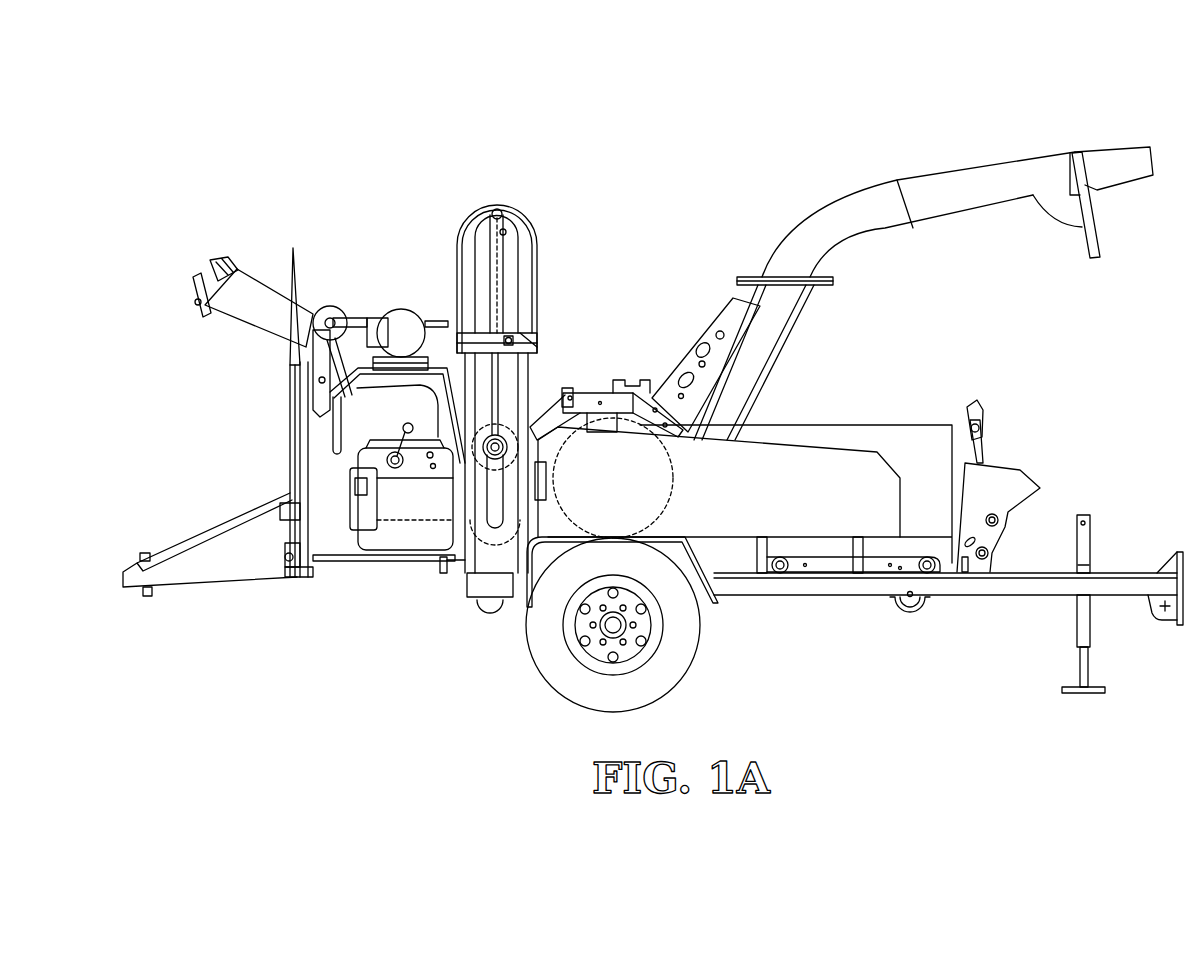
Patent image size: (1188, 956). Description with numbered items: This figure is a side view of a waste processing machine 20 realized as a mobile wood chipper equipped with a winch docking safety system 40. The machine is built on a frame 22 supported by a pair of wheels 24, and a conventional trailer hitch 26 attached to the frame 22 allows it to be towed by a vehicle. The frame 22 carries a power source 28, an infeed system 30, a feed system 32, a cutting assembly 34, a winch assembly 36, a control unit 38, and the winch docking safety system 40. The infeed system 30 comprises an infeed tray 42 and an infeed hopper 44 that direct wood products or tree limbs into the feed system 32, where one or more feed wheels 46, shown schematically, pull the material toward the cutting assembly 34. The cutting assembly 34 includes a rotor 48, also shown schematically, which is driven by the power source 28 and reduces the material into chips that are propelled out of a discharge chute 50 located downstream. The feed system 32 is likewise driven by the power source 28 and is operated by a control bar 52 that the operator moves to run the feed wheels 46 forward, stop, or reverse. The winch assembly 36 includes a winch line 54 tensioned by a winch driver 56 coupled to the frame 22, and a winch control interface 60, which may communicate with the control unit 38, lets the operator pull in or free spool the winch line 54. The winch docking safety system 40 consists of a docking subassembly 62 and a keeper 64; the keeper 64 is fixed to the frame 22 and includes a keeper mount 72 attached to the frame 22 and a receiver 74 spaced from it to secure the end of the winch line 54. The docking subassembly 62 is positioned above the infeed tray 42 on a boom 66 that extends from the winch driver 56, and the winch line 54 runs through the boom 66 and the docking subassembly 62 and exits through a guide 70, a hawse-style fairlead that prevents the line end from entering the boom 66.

The waste processing machine 20 is at (1118, 306).
The frame 22 is at (810, 587).
The wheels 24 is at (677, 635).
The trailer hitch 26 is at (1147, 573).
The power source 28 is at (843, 425).
The infeed system 30 is at (297, 580).
The feed system 32 is at (506, 562).
The cutting assembly 34 is at (583, 412).
The winch assembly 36 is at (375, 315).
The control unit 38 is at (430, 517).
The winch docking safety system 40 is at (290, 350).
The infeed tray 42 is at (180, 573).
The infeed hopper 44 is at (330, 540).
The feed wheels 46 is at (530, 387).
The rotor 48 is at (673, 478).
The discharge chute 50 is at (1118, 163).
The control bar 52 is at (286, 425).
The winch line 54 is at (265, 317).
The winch driver 56 is at (402, 322).
The winch control interface 60 is at (400, 472).
The docking subassembly 62 is at (207, 270).
The keeper 64 is at (332, 320).
The boom 66 is at (306, 318).
The guide 70 is at (190, 287).
The keeper mount 72 is at (303, 390).
The receiver 74 is at (350, 318).